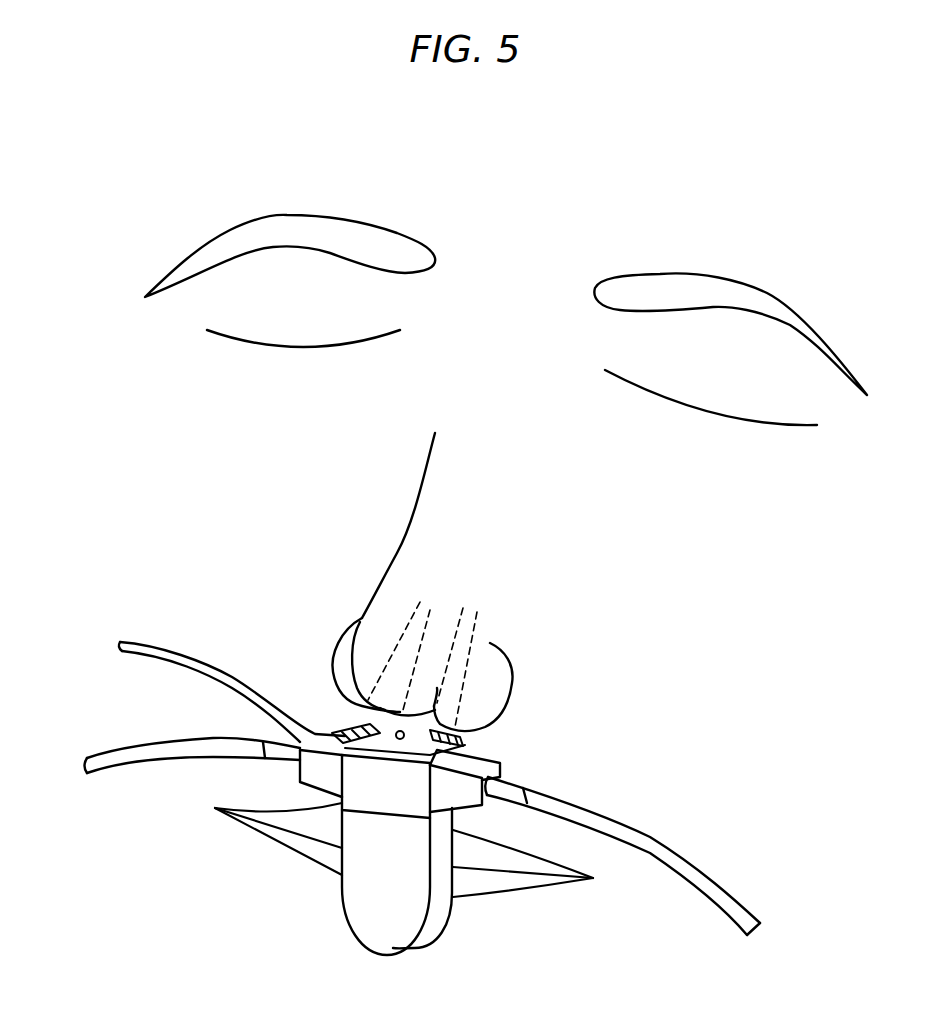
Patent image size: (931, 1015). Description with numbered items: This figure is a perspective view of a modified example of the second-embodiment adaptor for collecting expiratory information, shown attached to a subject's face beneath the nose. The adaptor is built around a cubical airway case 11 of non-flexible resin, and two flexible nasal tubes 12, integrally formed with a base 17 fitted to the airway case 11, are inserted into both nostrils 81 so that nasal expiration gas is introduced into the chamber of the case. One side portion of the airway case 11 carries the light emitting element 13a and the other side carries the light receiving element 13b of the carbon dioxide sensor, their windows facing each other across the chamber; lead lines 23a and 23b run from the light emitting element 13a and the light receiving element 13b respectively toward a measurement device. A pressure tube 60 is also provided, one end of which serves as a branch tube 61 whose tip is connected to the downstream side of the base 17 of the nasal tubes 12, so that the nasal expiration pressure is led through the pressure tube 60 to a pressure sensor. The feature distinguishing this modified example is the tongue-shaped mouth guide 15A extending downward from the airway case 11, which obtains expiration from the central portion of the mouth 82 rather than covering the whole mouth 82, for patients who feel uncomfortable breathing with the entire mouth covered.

The airway case 11 is at (380, 790).
The nasal tubes 12 is at (392, 672).
The light emitting element 13a is at (462, 793).
The light receiving element 13b is at (313, 773).
The tongue-shaped mouth guide 15A is at (413, 921).
The base 17 is at (500, 770).
The lead line 23a is at (670, 850).
The lead line 23b is at (130, 747).
The pressure tube 60 is at (288, 733).
The branch tube 61 is at (440, 731).
The nostrils 81 is at (415, 630).
The mouth 82 is at (530, 877).